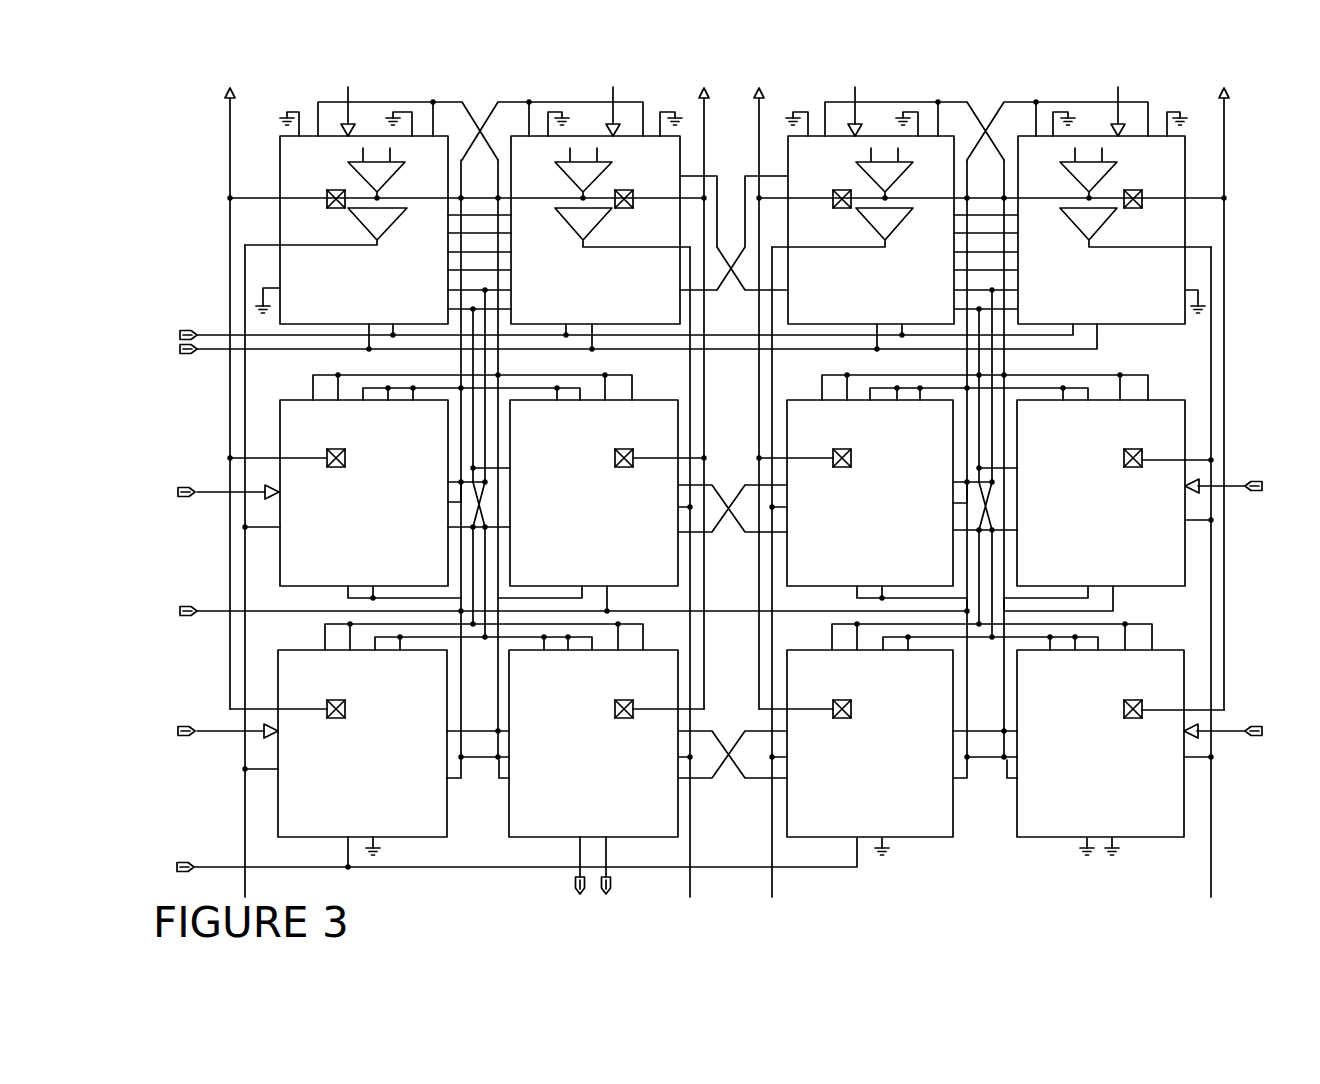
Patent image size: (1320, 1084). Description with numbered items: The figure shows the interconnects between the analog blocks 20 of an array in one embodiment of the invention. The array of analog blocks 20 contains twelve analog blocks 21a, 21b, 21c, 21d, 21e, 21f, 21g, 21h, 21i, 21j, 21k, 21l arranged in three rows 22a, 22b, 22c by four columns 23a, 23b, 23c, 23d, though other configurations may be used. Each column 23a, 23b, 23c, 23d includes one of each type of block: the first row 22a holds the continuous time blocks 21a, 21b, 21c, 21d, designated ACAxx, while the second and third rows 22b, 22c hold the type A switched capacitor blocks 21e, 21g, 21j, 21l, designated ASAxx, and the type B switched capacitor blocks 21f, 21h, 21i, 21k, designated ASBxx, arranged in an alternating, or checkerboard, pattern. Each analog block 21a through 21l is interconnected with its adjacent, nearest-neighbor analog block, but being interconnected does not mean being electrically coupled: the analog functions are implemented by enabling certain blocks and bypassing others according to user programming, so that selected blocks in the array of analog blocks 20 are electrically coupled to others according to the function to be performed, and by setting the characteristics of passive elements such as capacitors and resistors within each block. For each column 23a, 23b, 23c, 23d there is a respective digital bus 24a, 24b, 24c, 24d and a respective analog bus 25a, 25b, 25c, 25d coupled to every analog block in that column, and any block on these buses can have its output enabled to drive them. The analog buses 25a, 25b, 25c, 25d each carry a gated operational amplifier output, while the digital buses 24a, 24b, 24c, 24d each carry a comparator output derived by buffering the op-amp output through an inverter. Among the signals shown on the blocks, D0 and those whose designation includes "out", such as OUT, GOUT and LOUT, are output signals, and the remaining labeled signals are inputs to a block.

The array of analog blocks 20 is at (714, 498).
The continuous time block 21a is at (346, 286).
The continuous time block 21b is at (639, 292).
The continuous time block 21c is at (854, 292).
The continuous time block 21d is at (1123, 292).
The type A switched capacitor block 21e is at (377, 541).
The type B switched capacitor block 21f is at (583, 541).
The type A switched capacitor block 21g is at (883, 541).
The type B switched capacitor block 21h is at (1088, 541).
The type B switched capacitor block 21i is at (352, 794).
The type A switched capacitor block 21j is at (583, 794).
The type B switched capacitor block 21k is at (858, 794).
The type A switched capacitor block 21l is at (1089, 794).
The row 22a is at (697, 184).
The row 22b is at (672, 501).
The row 22c is at (672, 751).
The column 23a is at (377, 100).
The column 23b is at (575, 100).
The column 23c is at (849, 100).
The column 23d is at (1101, 100).
The digital bus 24a is at (223, 571).
The digital bus 24b is at (722, 572).
The digital bus 24c is at (803, 572).
The digital bus 24d is at (1242, 572).
The analog bus 25a is at (201, 398).
The analog bus 25b is at (714, 381).
The analog bus 25c is at (743, 398).
The analog bus 25d is at (1247, 399).